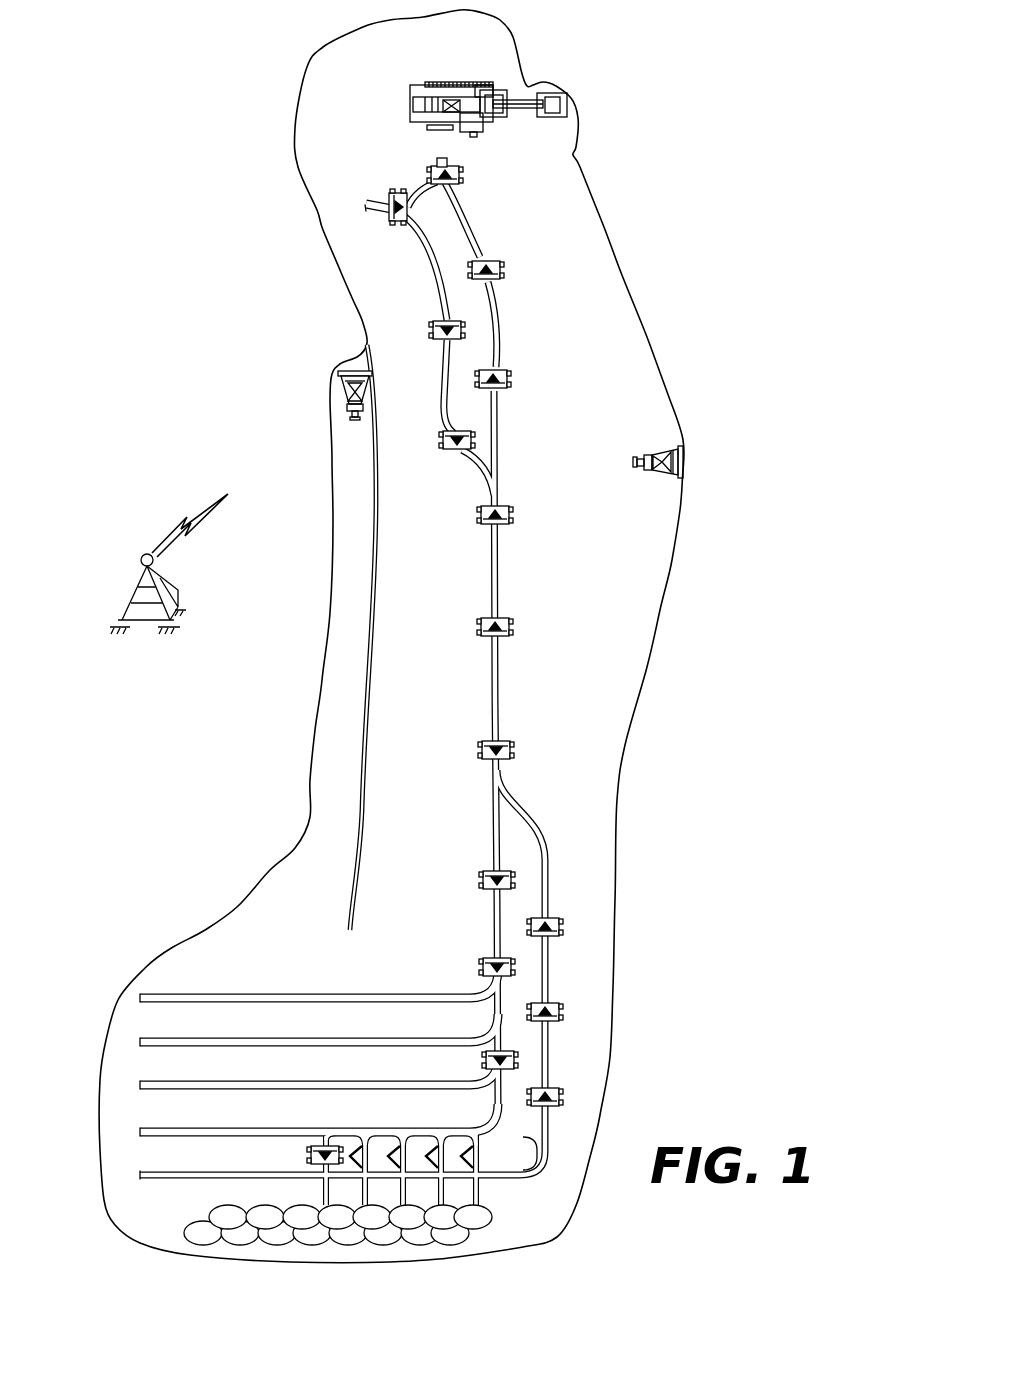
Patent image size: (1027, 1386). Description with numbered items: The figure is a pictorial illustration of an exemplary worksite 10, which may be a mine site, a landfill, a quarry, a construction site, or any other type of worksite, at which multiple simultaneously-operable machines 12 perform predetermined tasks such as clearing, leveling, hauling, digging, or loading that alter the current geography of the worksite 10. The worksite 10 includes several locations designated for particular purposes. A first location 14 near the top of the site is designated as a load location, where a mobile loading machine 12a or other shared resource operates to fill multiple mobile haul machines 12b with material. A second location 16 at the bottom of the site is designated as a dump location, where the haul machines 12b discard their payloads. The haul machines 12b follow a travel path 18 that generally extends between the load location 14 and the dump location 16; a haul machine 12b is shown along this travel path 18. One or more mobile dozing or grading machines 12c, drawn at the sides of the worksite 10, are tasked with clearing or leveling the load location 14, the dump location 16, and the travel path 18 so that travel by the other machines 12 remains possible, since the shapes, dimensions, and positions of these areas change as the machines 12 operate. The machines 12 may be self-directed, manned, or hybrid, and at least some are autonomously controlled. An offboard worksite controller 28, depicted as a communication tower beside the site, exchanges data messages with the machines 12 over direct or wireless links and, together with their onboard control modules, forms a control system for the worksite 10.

The worksite 10 is at (746, 1054).
The machines 12 is at (377, 681).
The mobile loading machine 12a is at (413, 84).
The mobile haul machines 12b is at (508, 515).
The mobile dozing or grading machines 12c is at (345, 372).
The first location 14 is at (374, 124).
The second location 16 is at (545, 1222).
The travel path 18 is at (497, 683).
The offboard worksite controller 28 is at (141, 561).